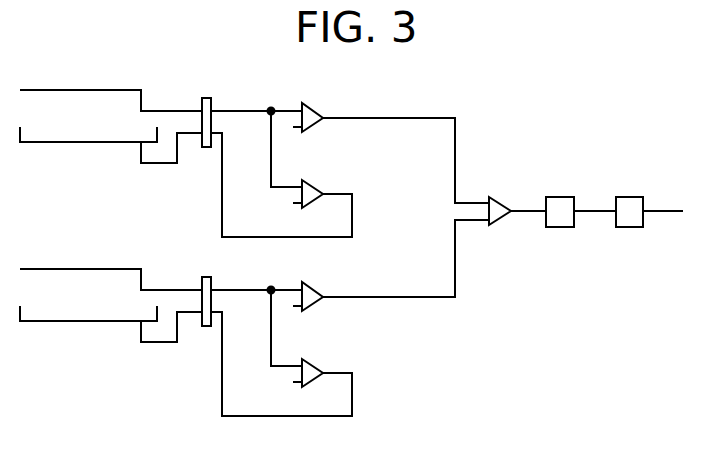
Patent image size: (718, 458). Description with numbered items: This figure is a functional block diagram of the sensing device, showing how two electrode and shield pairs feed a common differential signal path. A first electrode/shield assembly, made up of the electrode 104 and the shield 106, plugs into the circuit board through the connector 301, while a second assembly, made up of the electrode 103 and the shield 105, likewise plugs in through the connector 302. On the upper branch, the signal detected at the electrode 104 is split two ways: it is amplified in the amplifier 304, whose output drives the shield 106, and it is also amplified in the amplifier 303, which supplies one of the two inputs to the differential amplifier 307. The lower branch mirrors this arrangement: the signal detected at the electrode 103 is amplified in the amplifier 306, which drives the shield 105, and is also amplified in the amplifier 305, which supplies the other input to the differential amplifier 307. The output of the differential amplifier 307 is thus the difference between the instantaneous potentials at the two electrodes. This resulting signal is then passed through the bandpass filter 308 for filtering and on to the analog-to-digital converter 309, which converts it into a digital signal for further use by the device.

The electrode 103 is at (88, 268).
The electrode 104 is at (97, 90).
The shield 105 is at (95, 322).
The shield 106 is at (93, 142).
The connector 301 is at (207, 97).
The connector 302 is at (212, 278).
The amplifier 303 is at (305, 102).
The amplifier 304 is at (305, 180).
The amplifier 305 is at (303, 282).
The amplifier 306 is at (305, 359).
The differential amplifier 307 is at (504, 202).
The bandpass filter 308 is at (555, 196).
The analog-to-digital converter 309 is at (625, 196).